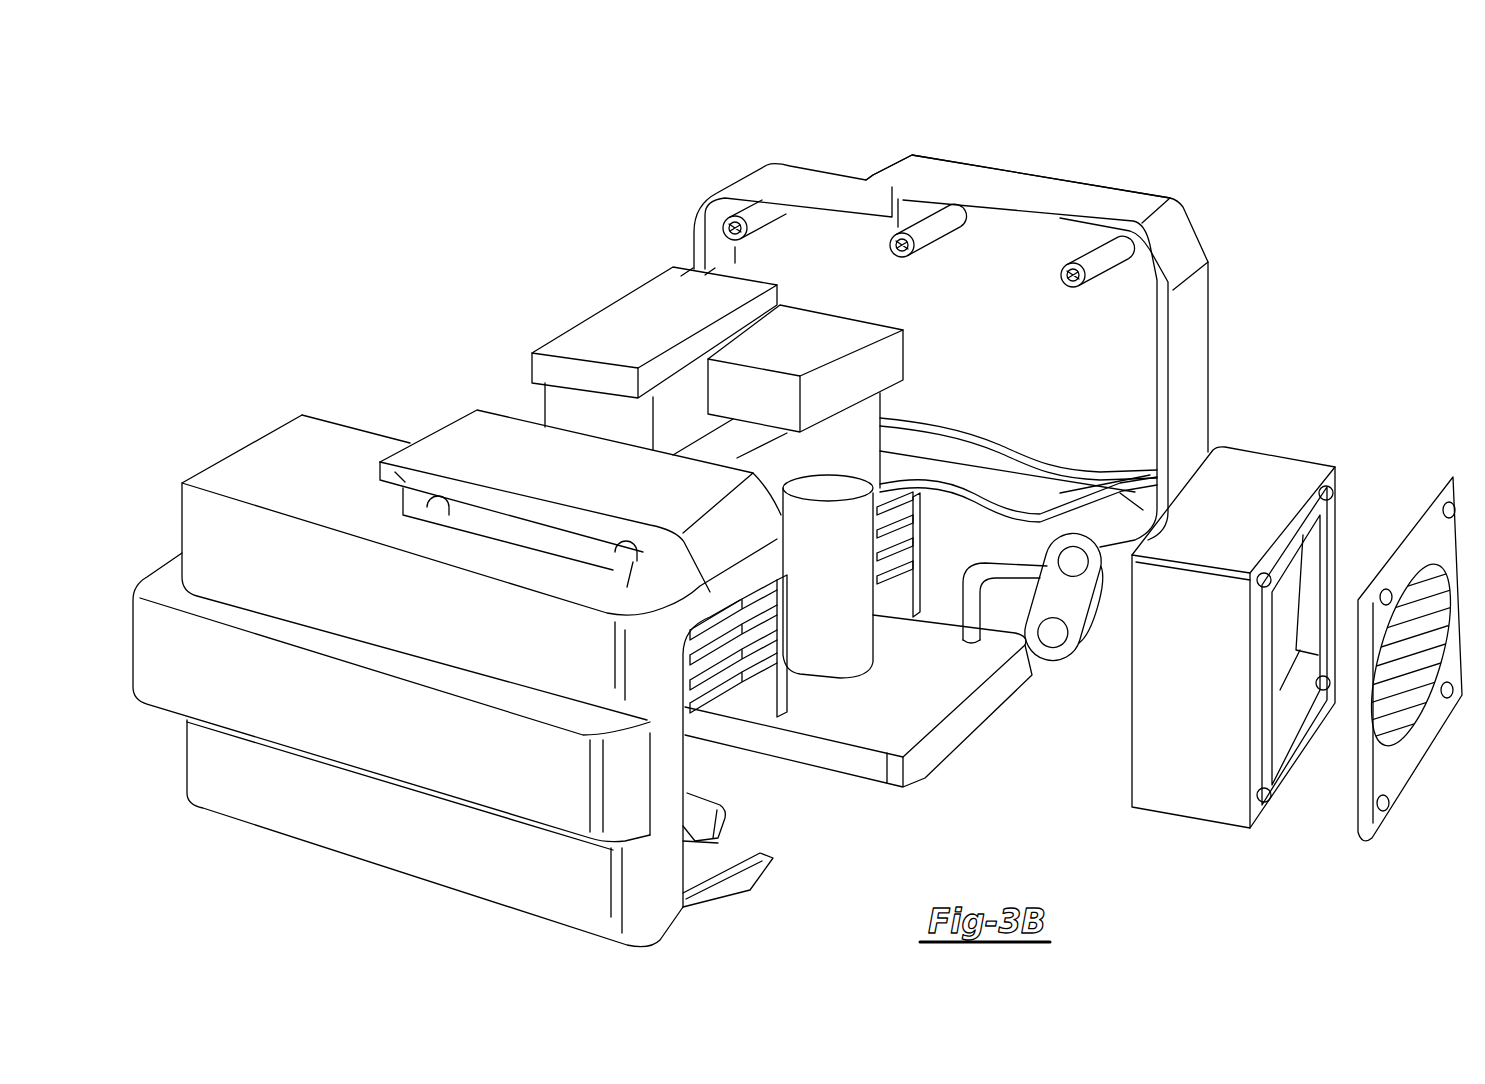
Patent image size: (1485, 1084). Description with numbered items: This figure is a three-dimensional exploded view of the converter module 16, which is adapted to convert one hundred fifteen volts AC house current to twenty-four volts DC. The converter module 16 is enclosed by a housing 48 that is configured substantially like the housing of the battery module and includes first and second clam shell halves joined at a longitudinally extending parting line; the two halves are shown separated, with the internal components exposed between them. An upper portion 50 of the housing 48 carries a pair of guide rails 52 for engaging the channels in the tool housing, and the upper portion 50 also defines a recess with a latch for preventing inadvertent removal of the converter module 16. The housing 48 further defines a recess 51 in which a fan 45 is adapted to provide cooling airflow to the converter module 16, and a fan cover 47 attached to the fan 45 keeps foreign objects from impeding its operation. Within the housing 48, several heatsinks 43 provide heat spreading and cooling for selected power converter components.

The converter module 16 is at (491, 323).
The heatsinks 43 is at (768, 702).
The fan 45 is at (1143, 730).
The fan cover 47 is at (1410, 755).
The housing 48 is at (1190, 371).
The upper portion 50 is at (475, 440).
The recess 51 is at (789, 832).
The guide rails 52 is at (393, 478).